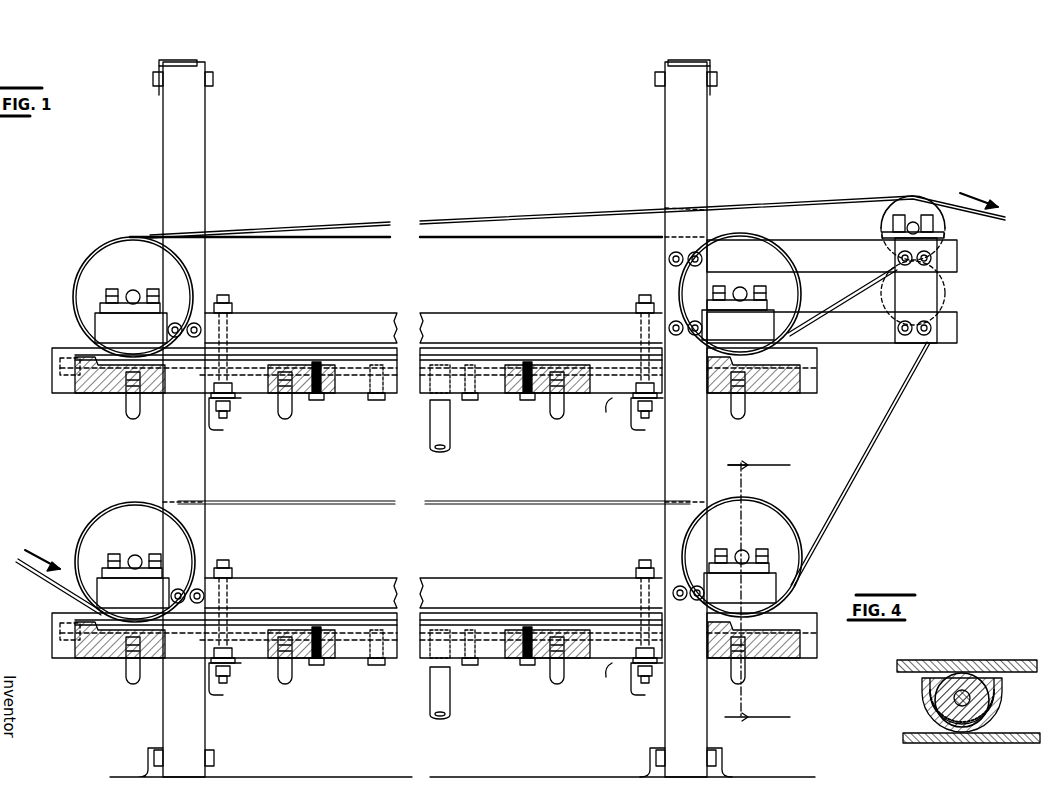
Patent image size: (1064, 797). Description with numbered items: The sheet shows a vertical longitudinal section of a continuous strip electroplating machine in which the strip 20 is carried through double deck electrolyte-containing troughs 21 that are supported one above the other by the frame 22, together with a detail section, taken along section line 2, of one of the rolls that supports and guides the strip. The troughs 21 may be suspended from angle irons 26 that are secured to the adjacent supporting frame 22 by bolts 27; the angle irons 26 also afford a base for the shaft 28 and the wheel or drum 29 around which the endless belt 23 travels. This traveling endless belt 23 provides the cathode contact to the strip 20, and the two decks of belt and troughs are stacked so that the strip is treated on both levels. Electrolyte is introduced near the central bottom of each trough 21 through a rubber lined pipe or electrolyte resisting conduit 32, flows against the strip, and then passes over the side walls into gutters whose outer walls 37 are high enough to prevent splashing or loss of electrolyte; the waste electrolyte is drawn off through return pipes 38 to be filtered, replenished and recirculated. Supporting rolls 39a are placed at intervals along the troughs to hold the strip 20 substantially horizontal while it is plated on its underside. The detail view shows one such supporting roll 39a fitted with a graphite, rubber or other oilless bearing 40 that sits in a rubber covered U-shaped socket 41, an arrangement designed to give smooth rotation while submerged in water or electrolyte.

In FIG. 1, the section line 2- 2 is at (762, 592).
In FIG. 1, the strip 20 is at (758, 207).
In FIG. 4, the strip 20 is at (922, 676).
In FIG. 1, the troughs 21 is at (105, 395).
In FIG. 1, the frame 22 is at (663, 469).
In FIG. 1, the endless belt 23 is at (639, 238).
In FIG. 4, the endless belt 23 is at (1003, 660).
In FIG. 1, the angle irons 26 is at (352, 313).
In FIG. 1, the bolts 27 is at (192, 322).
In FIG. 1, the shaft 28 is at (133, 290).
In FIG. 1, the wheel or drum 29 is at (78, 294).
In FIG. 1, the electrolyte resisting conduit 32 is at (432, 430).
In FIG. 1, the outer walls 37 is at (601, 542).
In FIG. 1, the return pipes 38 is at (130, 412).
In FIG. 1, the supporting rolls 39a is at (317, 358).
In FIG. 4, the supporting rolls 39a is at (1000, 690).
In FIG. 4, the oilless bearings 40 is at (1000, 716).
In FIG. 4, the U-shaped sockets 41 is at (926, 718).